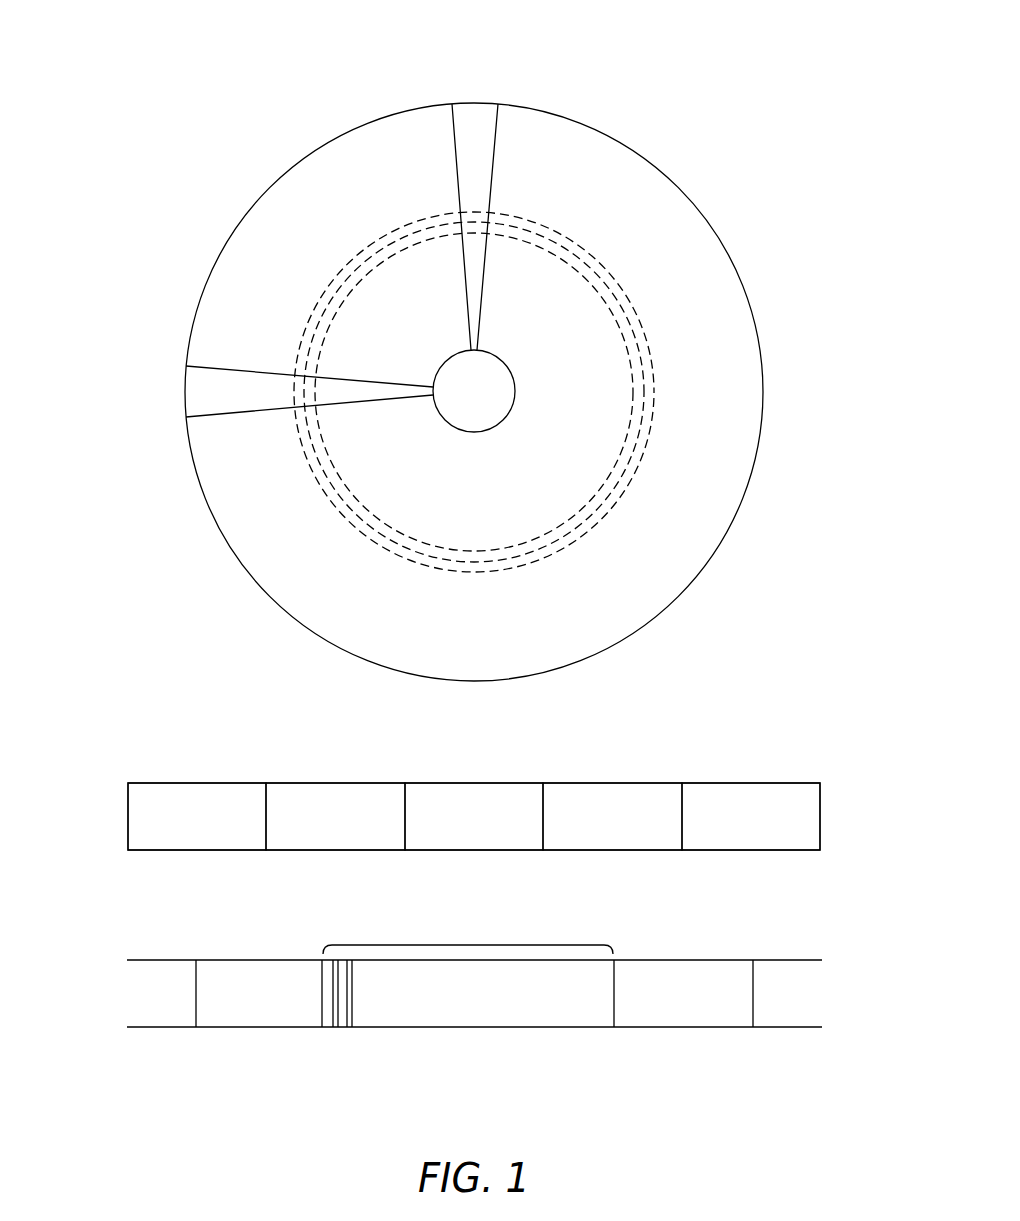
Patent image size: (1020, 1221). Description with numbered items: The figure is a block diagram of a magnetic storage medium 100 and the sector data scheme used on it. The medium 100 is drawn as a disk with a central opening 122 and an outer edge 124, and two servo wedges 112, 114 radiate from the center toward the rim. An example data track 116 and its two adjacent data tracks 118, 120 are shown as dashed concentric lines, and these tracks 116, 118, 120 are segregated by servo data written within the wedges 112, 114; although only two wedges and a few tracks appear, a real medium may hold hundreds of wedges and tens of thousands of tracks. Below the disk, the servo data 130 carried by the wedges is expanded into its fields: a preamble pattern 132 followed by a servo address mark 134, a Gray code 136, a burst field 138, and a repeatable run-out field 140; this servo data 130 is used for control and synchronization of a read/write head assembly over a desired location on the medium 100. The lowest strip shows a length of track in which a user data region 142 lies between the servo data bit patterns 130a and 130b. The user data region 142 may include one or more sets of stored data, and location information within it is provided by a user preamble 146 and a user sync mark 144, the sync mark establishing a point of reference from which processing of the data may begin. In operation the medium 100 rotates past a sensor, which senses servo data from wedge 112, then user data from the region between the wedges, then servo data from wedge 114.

The magnetic storage medium 100 is at (207, 70).
The servo wedge 112 is at (185, 380).
The servo wedge 114 is at (483, 101).
The data track 116 is at (638, 432).
The adjacent data track 118 is at (625, 488).
The adjacent data track 120 is at (632, 386).
The center hole 122 is at (472, 432).
The disk outer edge 124 is at (743, 502).
The servo data 130 is at (723, 746).
The preamble pattern 132 is at (217, 844).
The servo address mark 134 is at (356, 844).
The Gray code 136 is at (494, 844).
The burst field 138 is at (633, 844).
The repeatable run-out (RRO) field 140 is at (771, 844).
The servo data bit pattern 130a is at (284, 1023).
The servo data bit pattern 130b is at (709, 1023).
The user data region 142 is at (568, 925).
The user sync mark 144 is at (350, 1033).
The user preamble 146 is at (338, 1033).